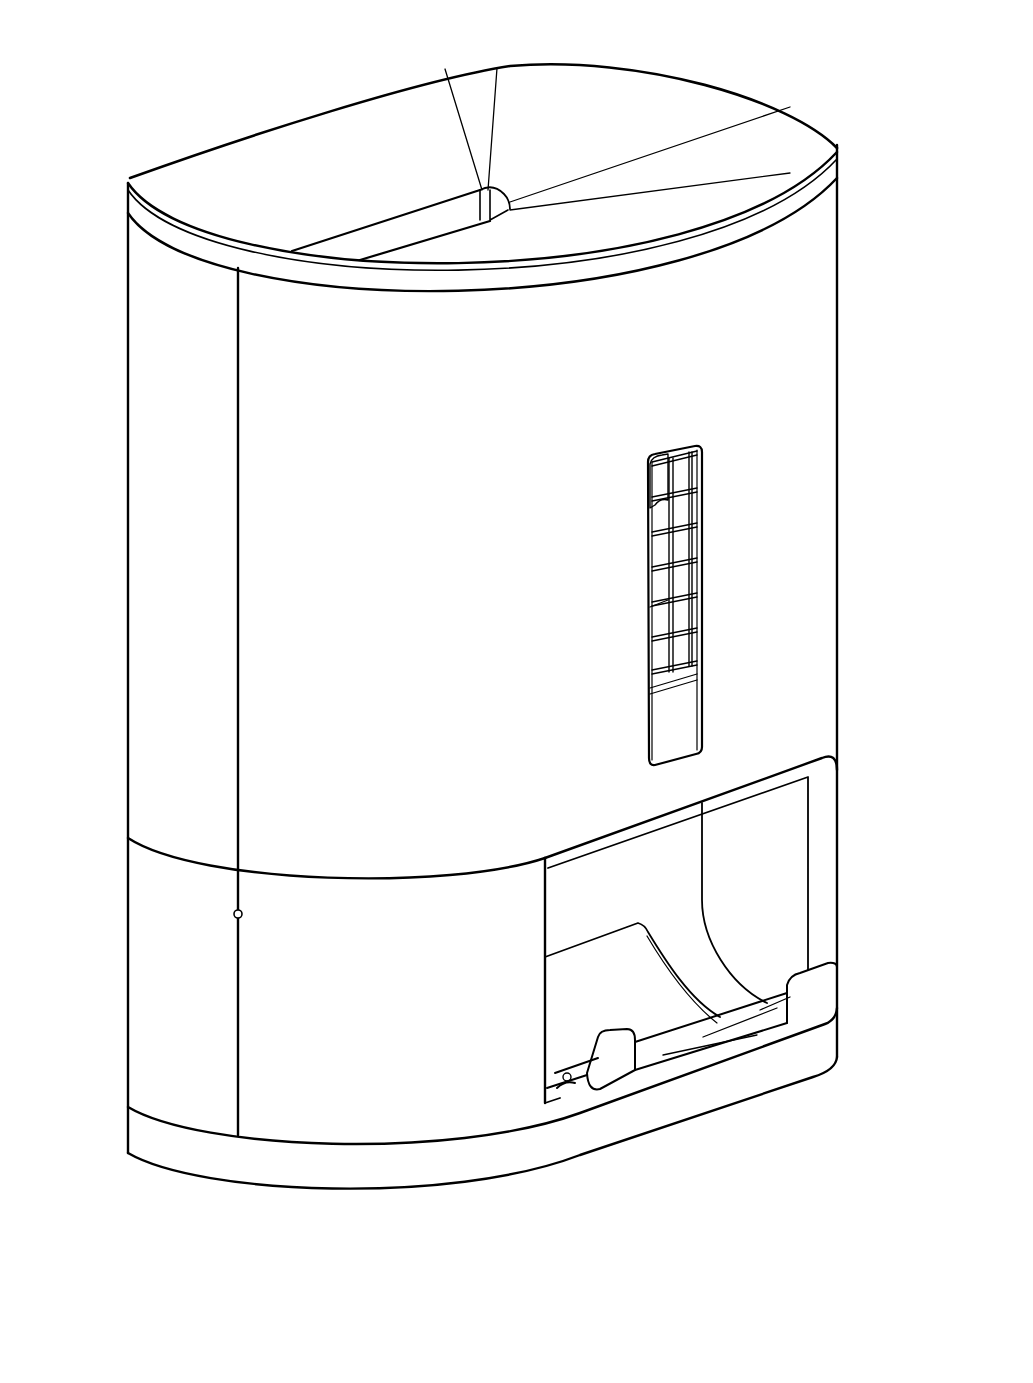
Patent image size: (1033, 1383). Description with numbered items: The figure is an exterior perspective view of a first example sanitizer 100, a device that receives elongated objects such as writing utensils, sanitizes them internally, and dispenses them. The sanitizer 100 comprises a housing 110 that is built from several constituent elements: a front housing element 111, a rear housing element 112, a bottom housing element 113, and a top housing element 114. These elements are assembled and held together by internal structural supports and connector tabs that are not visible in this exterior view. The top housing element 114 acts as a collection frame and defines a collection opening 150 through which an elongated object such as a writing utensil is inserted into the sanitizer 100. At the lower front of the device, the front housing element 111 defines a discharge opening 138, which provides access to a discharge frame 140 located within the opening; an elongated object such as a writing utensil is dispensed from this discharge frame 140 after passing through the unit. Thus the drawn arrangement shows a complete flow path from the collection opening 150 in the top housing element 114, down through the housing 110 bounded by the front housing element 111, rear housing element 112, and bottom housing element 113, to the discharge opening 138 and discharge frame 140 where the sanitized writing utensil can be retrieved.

The sanitizer 100 is at (168, 40).
The housing 110 is at (780, 297).
The front housing element 111 is at (843, 503).
The rear housing element 112 is at (127, 720).
The bottom housing element 113 is at (126, 1128).
The top housing element 114 is at (635, 120).
The discharge opening 138 is at (782, 881).
The discharge frame 140 is at (803, 1033).
The collection opening 150 is at (357, 222).